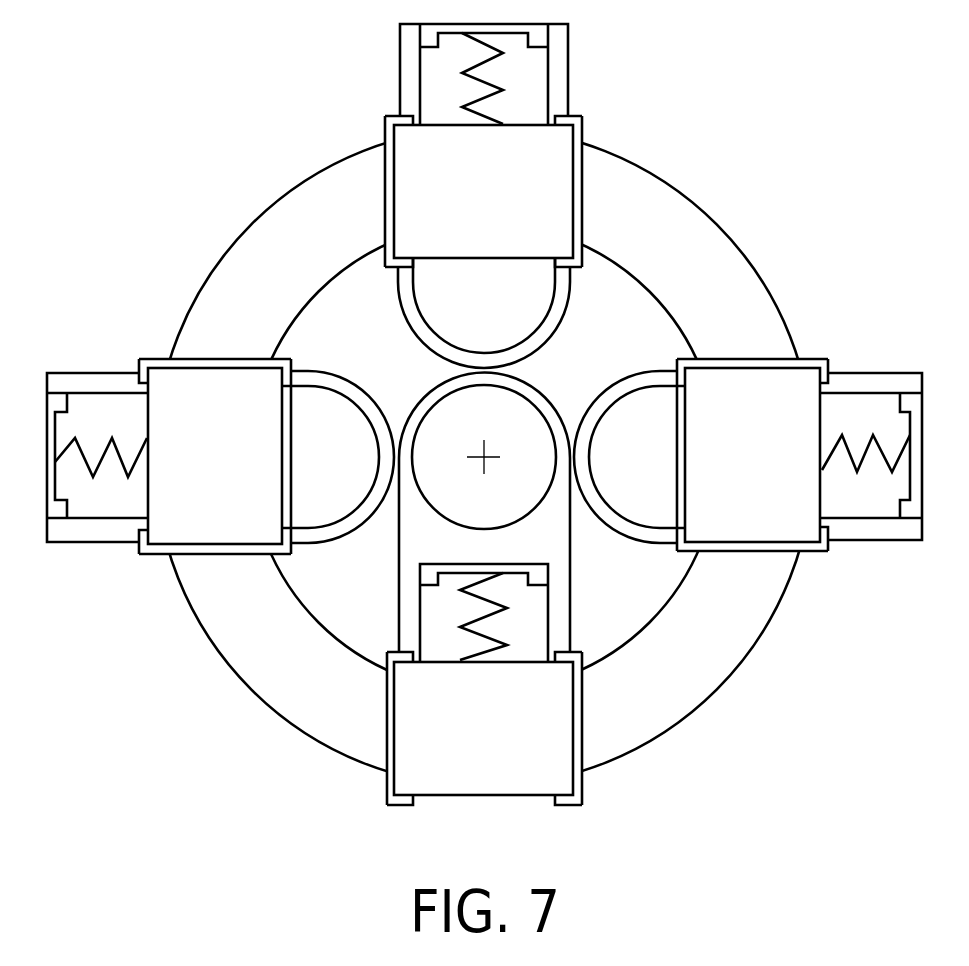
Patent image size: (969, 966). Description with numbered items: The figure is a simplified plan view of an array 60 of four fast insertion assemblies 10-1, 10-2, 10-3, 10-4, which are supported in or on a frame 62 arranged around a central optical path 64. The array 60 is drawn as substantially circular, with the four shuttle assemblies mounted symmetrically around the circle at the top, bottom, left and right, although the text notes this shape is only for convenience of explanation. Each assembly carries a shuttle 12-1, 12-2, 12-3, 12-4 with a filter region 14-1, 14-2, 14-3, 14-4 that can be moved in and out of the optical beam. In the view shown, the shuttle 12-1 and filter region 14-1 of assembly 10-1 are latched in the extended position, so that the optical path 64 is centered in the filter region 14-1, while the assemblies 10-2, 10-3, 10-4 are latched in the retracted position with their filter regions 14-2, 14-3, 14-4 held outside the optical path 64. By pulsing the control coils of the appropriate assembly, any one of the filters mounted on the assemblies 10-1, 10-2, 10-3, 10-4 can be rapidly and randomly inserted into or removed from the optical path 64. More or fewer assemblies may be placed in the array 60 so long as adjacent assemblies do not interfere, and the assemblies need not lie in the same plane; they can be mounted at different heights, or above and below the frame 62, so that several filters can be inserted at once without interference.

The array 60 is at (226, 791).
The frame 62 is at (293, 277).
The optical path 64 is at (482, 454).
The fast insertion assembly 10-1 is at (472, 620).
The fast insertion assembly 10-2 is at (749, 486).
The fast insertion assembly 10-3 is at (495, 196).
The fast insertion assembly 10-4 is at (220, 428).
The shuttle 12-1 is at (571, 590).
The shuttle 12-2 is at (872, 373).
The shuttle 12-3 is at (399, 75).
The shuttle 12-4 is at (115, 543).
The filter region 14-1 is at (484, 457).
The filter region 14-2 is at (614, 473).
The filter region 14-3 is at (507, 317).
The filter region 14-4 is at (353, 471).